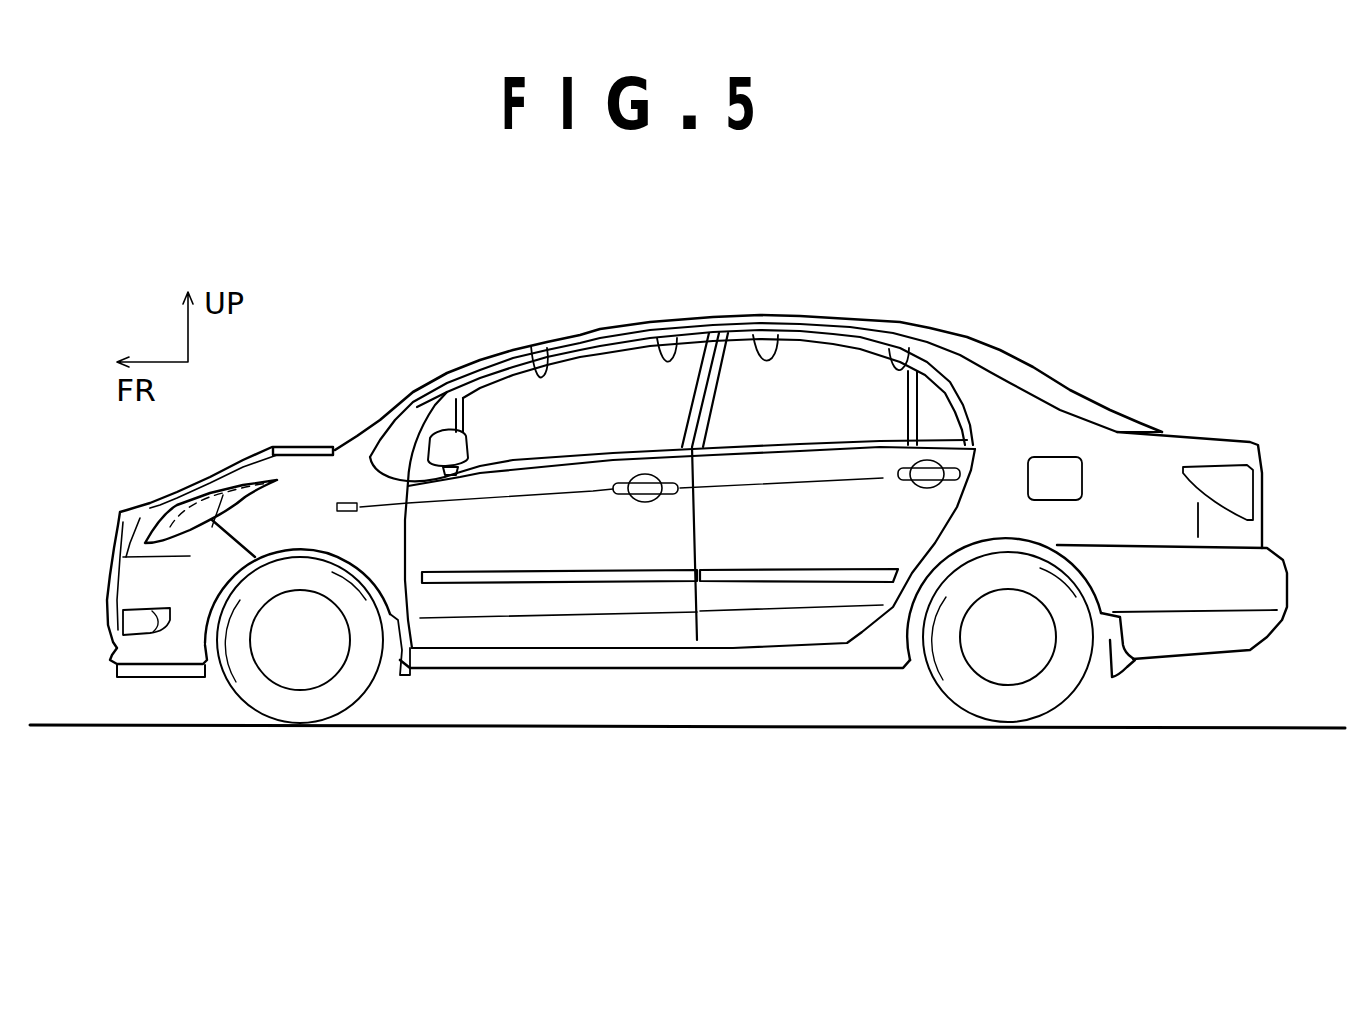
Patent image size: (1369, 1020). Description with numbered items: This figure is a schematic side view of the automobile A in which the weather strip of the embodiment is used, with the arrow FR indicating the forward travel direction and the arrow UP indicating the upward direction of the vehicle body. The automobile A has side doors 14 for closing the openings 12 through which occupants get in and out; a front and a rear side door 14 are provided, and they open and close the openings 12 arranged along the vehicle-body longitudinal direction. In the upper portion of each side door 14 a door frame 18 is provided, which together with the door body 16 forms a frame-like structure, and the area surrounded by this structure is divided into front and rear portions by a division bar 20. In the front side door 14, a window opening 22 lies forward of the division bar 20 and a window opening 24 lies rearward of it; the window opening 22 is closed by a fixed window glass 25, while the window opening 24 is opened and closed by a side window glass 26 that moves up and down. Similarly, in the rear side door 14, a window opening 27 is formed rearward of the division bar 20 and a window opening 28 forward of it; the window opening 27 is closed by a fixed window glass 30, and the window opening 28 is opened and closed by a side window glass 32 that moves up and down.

The opening 12 is at (752, 340).
The side door 14 is at (617, 597).
The door body 16 is at (552, 477).
The door frame 18 is at (583, 336).
The division bar 20 is at (477, 360).
The window opening 22 is at (433, 383).
The window opening 24 is at (545, 360).
The fixed window glass 25 is at (430, 417).
The side window glass 26 is at (627, 370).
The window opening 27 is at (960, 426).
The window opening 28 is at (897, 370).
The fixed window glass 30 is at (920, 408).
The side window glass 32 is at (810, 367).
The automobile A is at (1022, 301).